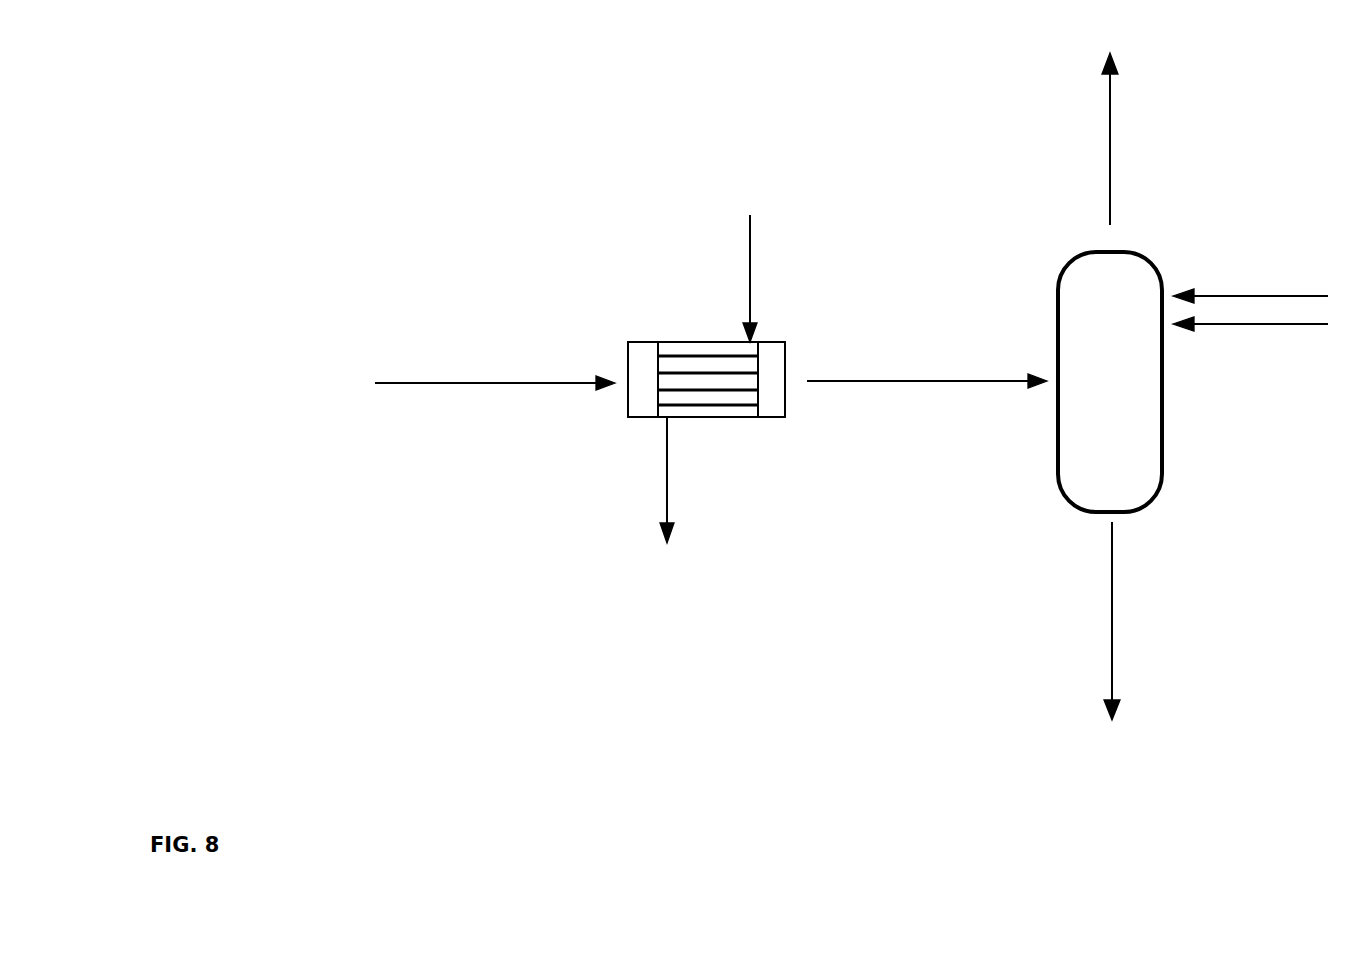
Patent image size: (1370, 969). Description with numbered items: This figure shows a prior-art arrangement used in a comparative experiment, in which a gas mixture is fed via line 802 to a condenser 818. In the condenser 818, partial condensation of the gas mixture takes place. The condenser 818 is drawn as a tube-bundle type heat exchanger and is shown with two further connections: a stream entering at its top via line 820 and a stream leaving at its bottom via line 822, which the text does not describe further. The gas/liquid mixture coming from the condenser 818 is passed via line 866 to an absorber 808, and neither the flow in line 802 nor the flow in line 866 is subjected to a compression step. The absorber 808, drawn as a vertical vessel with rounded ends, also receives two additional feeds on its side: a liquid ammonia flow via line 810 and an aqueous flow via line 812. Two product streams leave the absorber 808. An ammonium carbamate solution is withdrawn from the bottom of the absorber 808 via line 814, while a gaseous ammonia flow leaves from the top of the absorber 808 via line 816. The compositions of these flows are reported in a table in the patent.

The line 802 is at (495, 362).
The condenser 818 is at (711, 329).
The heating medium inlet stream 820 is at (768, 278).
The heating medium outlet stream 822 is at (688, 480).
The line 866 is at (927, 360).
The absorber 808 is at (1129, 398).
The line 810 is at (1250, 285).
The line 812 is at (1250, 347).
The line 816 is at (1136, 139).
The line 814 is at (1138, 621).